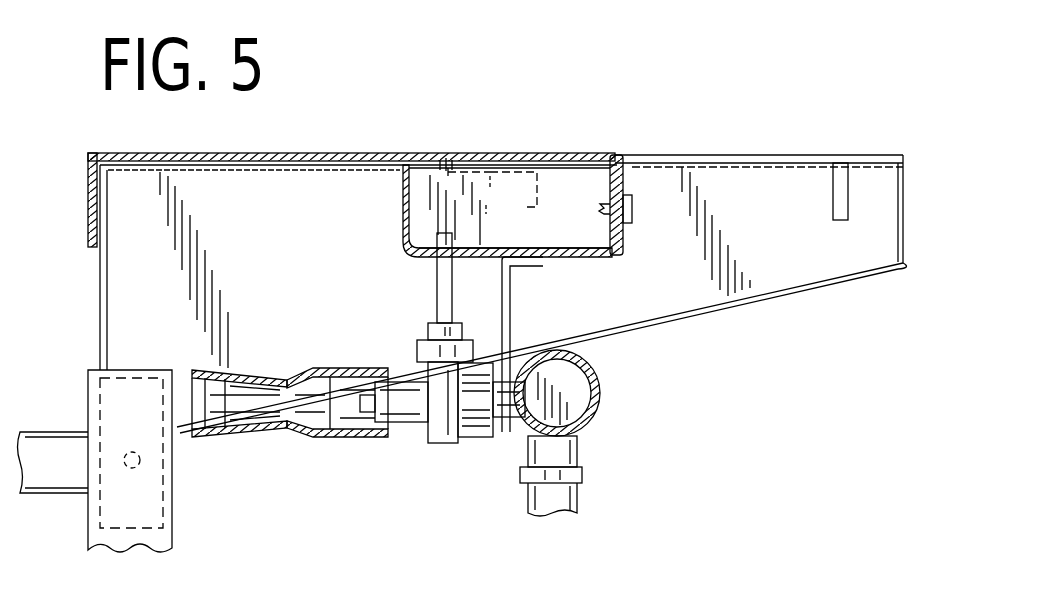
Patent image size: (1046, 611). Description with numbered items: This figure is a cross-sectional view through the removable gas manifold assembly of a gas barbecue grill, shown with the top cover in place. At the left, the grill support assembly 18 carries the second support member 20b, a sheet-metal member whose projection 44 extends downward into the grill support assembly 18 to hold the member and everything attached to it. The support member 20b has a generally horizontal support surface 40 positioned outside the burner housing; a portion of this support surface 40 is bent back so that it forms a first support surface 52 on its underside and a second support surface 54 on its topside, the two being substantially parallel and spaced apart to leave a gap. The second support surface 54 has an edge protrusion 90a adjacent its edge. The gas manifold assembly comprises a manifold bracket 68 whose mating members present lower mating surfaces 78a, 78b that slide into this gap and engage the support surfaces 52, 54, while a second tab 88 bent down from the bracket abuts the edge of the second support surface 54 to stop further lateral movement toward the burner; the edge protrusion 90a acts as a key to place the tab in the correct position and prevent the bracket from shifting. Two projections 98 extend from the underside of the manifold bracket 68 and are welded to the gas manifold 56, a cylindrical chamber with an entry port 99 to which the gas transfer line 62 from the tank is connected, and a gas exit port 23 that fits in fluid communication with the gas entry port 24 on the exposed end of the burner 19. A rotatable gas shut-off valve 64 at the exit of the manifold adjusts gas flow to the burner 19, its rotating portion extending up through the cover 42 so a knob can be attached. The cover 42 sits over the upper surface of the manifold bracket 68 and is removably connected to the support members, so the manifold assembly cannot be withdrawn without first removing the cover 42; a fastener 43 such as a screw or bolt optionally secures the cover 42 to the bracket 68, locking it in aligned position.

The grill support assembly 18 is at (172, 528).
The burner 19 is at (238, 437).
The second support member 20b is at (800, 290).
The gas exit port 23 is at (395, 425).
The gas entry port 24 is at (337, 437).
The support surface 40 is at (718, 156).
The cover 42 is at (88, 188).
The fastener 43 is at (635, 208).
The projection 44 is at (108, 402).
The first support surface 52 is at (437, 163).
The second support surface 54 is at (507, 196).
The gas manifold 56 is at (605, 378).
The gas transfer line 62 is at (578, 500).
The gas shut-off valve 64 is at (437, 300).
The manifold bracket 68 is at (588, 256).
The lower mating surface 78a is at (480, 165).
The lower mating surface 78b is at (493, 175).
The second tab 88 is at (585, 217).
The edge protrusion 90a is at (558, 182).
The projection 98 is at (510, 312).
The entry port 99 is at (578, 460).